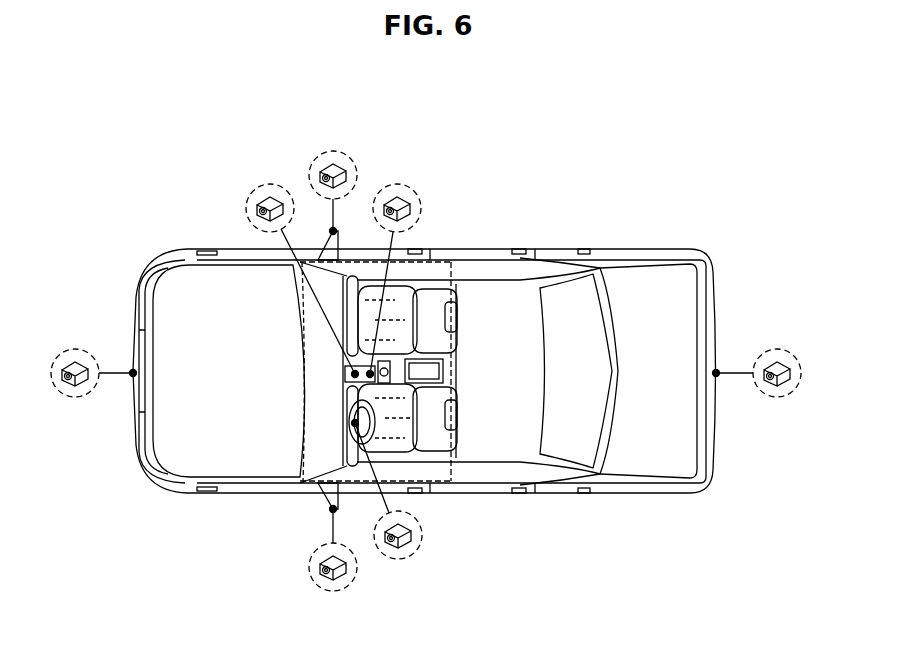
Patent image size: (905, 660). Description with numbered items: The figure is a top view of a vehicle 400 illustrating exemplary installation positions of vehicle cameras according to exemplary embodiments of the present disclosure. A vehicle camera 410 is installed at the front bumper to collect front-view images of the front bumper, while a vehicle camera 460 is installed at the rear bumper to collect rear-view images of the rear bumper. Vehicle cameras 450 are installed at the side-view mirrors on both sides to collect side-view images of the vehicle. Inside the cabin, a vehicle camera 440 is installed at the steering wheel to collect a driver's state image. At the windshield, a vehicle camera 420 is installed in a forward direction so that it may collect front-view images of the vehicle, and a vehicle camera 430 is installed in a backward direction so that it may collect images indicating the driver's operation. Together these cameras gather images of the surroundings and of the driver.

The vehicle sensor system 400 is at (148, 108).
The vehicle camera 410 is at (73, 349).
The vehicle camera 420 is at (267, 184).
The vehicle camera 430 is at (394, 184).
The vehicle camera 440 is at (400, 559).
The vehicle cameras 450 is at (331, 151).
The vehicle camera 460 is at (773, 349).